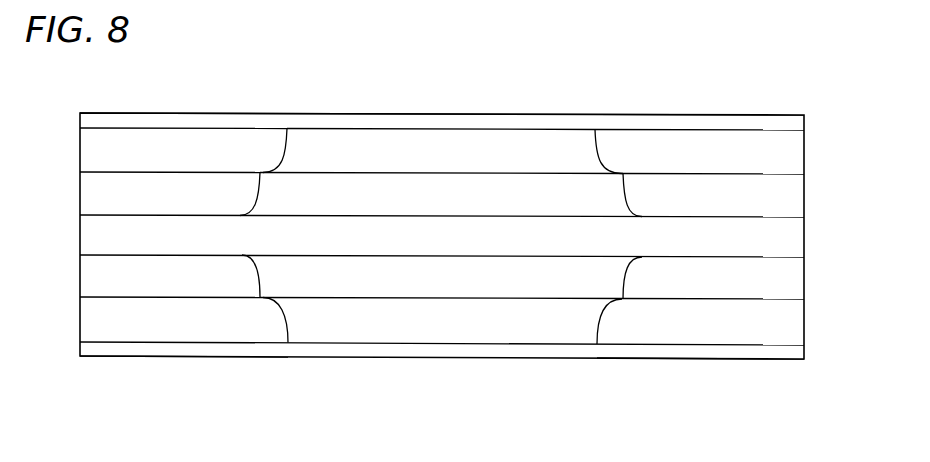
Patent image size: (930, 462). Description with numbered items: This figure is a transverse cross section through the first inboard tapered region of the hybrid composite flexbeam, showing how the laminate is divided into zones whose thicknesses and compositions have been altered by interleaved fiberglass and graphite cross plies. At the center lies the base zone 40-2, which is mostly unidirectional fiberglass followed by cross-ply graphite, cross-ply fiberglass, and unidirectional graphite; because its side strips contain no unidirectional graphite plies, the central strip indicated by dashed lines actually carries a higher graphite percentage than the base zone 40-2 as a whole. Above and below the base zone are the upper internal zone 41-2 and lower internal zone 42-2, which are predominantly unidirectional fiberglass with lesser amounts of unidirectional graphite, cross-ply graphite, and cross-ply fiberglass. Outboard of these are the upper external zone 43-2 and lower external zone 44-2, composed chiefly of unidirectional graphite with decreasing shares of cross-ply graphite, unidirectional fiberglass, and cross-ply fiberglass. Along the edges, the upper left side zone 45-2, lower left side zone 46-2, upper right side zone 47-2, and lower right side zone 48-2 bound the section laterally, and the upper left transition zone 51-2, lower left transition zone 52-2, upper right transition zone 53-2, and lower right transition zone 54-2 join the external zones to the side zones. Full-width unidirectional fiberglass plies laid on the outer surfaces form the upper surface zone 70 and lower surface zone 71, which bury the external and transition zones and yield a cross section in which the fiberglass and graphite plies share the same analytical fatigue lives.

The upper surface zone 70 is at (527, 122).
The lower surface zone 71 is at (235, 348).
The upper left transition zone 51-2 is at (130, 148).
The upper external zone 43-2 is at (438, 153).
The upper right transition zone 53-2 is at (663, 157).
The upper left side zone 45-2 is at (97, 193).
The upper internal zone 41-2 is at (310, 192).
The upper right side zone 47-2 is at (775, 198).
The base zone 40-2 is at (457, 243).
The lower right side zone 48-2 is at (767, 273).
The lower left side zone 46-2 is at (97, 325).
The lower external zone 44-2 is at (367, 325).
The lower internal zone 42-2 is at (542, 283).
The lower left transition zone 52-2 is at (157, 328).
The lower right transition zone 54-2 is at (693, 332).